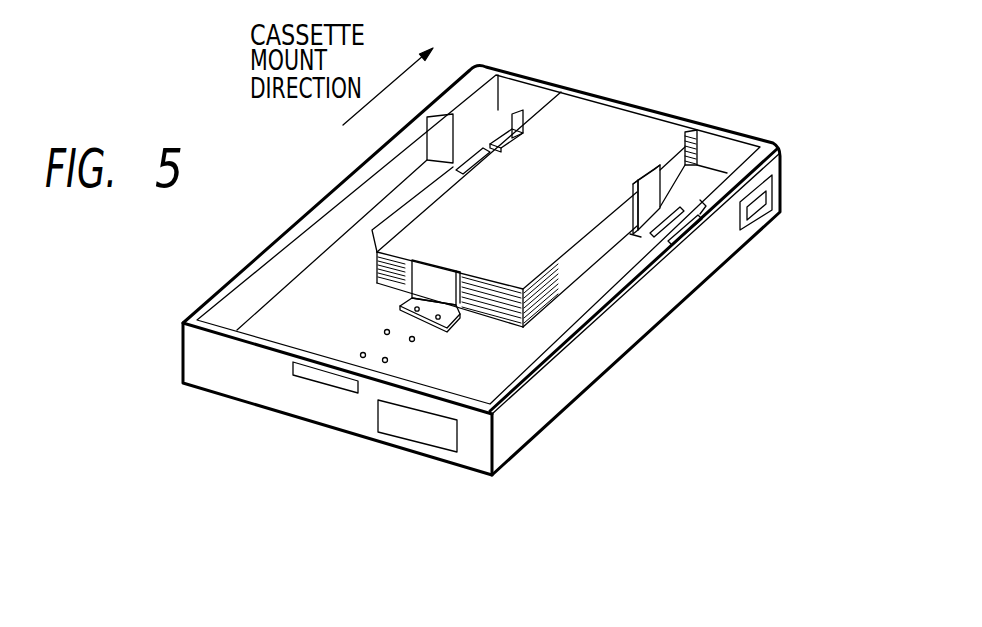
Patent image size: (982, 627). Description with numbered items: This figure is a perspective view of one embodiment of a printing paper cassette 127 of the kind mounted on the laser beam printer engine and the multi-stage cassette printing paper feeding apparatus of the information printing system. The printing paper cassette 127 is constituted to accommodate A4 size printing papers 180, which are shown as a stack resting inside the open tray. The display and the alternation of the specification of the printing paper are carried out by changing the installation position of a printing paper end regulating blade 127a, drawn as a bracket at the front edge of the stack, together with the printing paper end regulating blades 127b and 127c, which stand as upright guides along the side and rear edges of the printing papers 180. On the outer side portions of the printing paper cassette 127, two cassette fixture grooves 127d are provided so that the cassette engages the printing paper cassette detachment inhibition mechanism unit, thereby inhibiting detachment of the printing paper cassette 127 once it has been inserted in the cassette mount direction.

The printing paper cassette 127 is at (525, 422).
The printing paper end regulating blade 127a is at (422, 276).
The printing paper end regulating blade 127b is at (647, 167).
The printing paper end regulating blade 127c is at (515, 112).
The cassette fixture groove 127d is at (755, 215).
The printing papers 180 is at (523, 253).